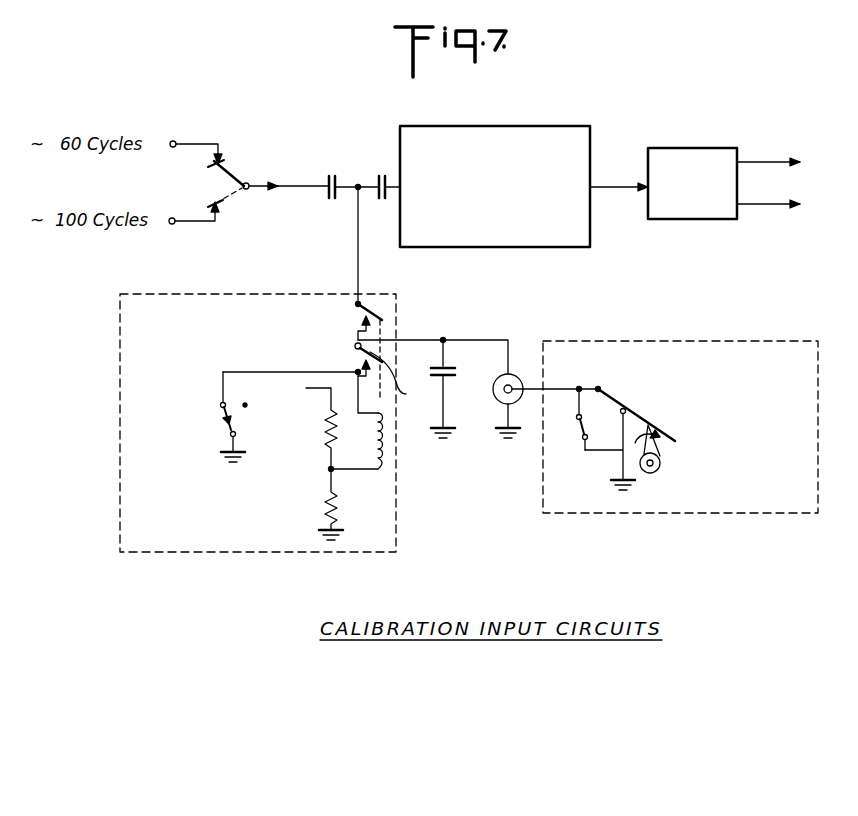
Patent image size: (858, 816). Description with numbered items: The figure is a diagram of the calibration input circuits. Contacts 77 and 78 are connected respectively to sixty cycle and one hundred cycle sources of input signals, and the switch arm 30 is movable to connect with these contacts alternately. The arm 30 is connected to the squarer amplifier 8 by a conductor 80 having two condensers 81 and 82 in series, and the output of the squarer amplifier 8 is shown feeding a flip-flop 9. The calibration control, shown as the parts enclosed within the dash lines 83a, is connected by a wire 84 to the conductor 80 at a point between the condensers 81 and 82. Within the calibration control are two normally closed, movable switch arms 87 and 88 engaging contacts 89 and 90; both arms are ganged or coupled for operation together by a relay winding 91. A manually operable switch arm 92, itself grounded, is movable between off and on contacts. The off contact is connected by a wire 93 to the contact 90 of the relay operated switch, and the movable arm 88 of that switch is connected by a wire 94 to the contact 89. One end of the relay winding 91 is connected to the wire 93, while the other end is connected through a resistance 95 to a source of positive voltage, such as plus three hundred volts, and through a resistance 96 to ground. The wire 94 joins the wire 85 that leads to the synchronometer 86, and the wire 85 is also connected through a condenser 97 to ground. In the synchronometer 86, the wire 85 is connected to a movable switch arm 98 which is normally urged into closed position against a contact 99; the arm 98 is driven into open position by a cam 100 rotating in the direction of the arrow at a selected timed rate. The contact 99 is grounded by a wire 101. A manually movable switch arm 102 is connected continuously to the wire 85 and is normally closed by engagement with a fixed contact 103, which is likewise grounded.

The contact 77 is at (224, 161).
The contact 78 is at (222, 205).
The switch arm 30 is at (214, 180).
The conductor 80 is at (296, 188).
The condenser 81 is at (327, 202).
The condenser 82 is at (380, 202).
The squarer amplifier 8 is at (495, 186).
The flip-flop 9 is at (696, 148).
The wire 84 is at (356, 266).
The dash lines 83a is at (120, 511).
The movable switch arm 87 is at (368, 318).
The contact 89 is at (352, 307).
The wire 94 is at (357, 329).
The movable switch arm 88 is at (354, 353).
The contact 90 is at (398, 380).
The wire 93 is at (257, 374).
The manually operable switch arm 92 is at (226, 421).
The resistance 95 is at (325, 440).
The resistance 96 is at (325, 492).
The relay winding 91 is at (378, 470).
The wire 85 is at (474, 338).
The condenser 97 is at (440, 367).
The synchronometer 86 is at (774, 330).
The movable switch arm 98 is at (636, 414).
The contact 99 is at (620, 412).
The manually movable switch arm 102 is at (577, 430).
The fixed contact 103 is at (584, 446).
The wire 101 is at (622, 437).
The cam 100 is at (658, 468).